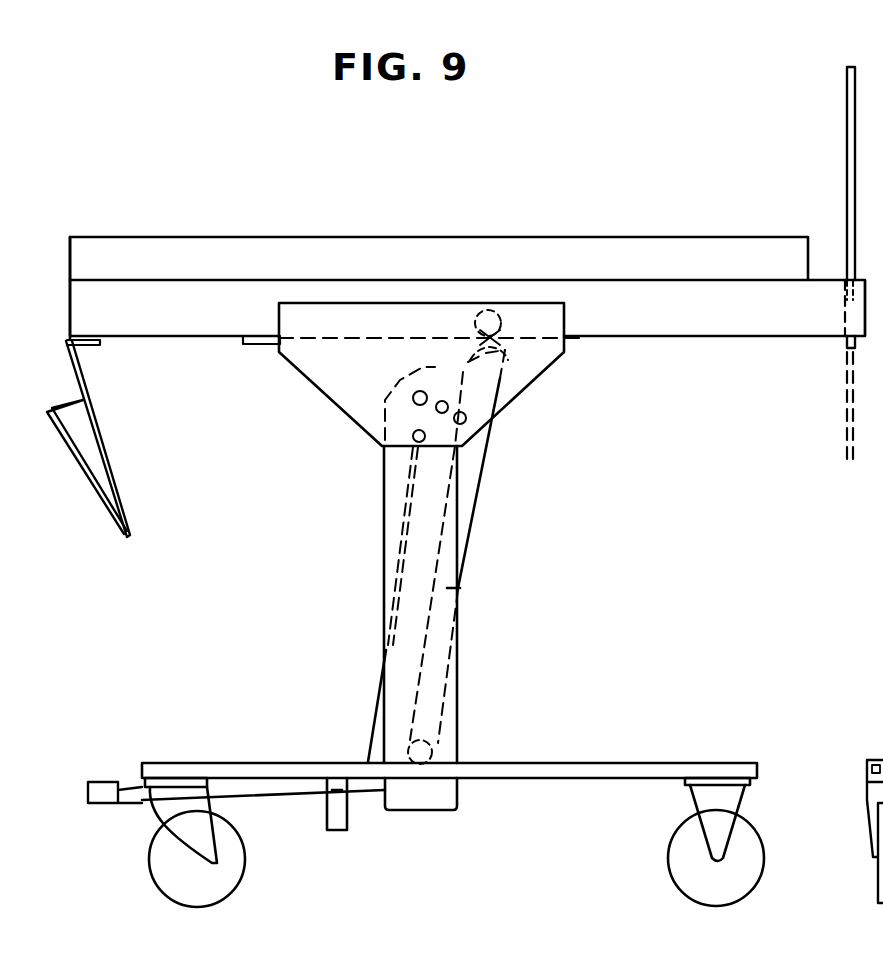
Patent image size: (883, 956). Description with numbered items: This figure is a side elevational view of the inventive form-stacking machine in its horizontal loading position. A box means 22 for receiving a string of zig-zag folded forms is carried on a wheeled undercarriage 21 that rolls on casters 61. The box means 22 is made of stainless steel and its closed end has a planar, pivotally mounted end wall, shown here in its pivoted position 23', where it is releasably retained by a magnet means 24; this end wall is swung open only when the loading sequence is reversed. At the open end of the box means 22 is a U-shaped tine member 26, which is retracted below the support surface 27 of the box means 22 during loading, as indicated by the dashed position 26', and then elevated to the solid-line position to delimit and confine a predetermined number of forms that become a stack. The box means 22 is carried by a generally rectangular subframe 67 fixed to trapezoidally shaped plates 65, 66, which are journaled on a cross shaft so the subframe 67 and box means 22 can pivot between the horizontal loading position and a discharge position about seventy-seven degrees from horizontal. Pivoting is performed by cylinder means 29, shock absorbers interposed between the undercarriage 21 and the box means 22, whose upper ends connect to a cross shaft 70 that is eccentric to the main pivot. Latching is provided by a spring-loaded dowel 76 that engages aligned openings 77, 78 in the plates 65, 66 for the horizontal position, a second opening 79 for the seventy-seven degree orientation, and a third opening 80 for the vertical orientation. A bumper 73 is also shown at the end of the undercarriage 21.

The undercarriage 21 is at (524, 786).
The box means 22 is at (67, 283).
The end wall in pivoted position 23' is at (107, 439).
The magnet means 24 is at (258, 343).
The U-shaped tine member 26 is at (865, 207).
The retracted tine member 26' is at (807, 408).
The support surface 27 is at (820, 279).
The cylinder means 29 is at (487, 501).
The casters 61 is at (230, 872).
The trapezoidally shaped plate 65 is at (538, 356).
The trapezoidally shaped plate 66 is at (874, 338).
The subframe 67 is at (722, 338).
The cross shaft 70 is at (490, 312).
The bumper 73 is at (103, 781).
The spring-loaded dowel 76 is at (882, 510).
The opening 77 is at (413, 436).
The opening 78 is at (882, 415).
The second opening 79 is at (466, 422).
The third opening 80 is at (441, 401).